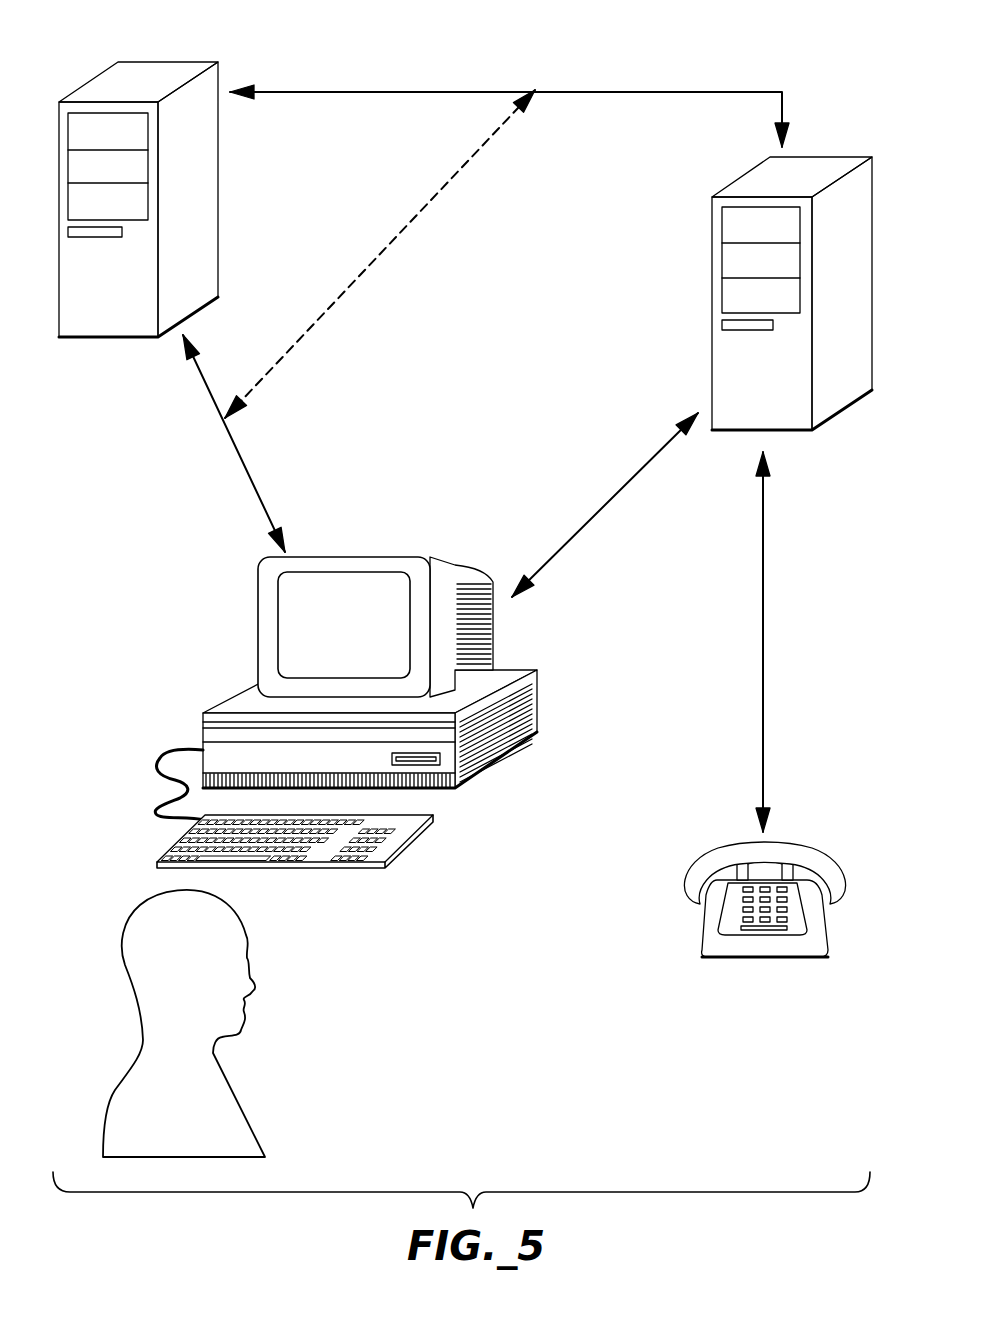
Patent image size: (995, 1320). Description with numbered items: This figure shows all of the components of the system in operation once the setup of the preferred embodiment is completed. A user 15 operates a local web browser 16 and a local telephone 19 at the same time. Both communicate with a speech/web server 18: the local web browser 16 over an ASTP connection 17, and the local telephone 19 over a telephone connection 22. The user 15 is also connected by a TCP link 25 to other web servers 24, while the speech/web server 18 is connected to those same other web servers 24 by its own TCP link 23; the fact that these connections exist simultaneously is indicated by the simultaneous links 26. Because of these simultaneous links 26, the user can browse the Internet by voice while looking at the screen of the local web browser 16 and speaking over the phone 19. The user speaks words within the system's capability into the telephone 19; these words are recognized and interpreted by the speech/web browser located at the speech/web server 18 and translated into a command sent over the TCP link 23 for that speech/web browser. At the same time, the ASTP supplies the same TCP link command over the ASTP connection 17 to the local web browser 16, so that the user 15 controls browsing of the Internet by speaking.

The user 15 is at (243, 1093).
The local web browser 16 is at (493, 765).
The ASTP connection 17 is at (615, 492).
The speech/web server 18 is at (712, 303).
The local telephone 19 is at (717, 847).
The telephone connection 22 is at (763, 625).
The TCP link 23 is at (707, 92).
The other web servers 24 is at (220, 128).
The TCP link 25 is at (250, 470).
The simultaneous links 26 is at (385, 252).